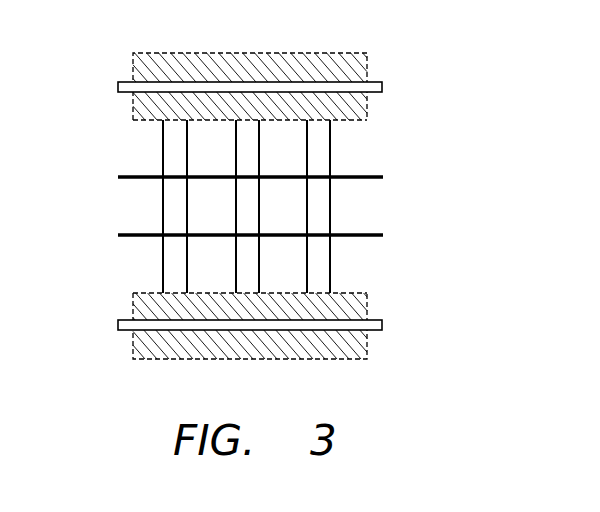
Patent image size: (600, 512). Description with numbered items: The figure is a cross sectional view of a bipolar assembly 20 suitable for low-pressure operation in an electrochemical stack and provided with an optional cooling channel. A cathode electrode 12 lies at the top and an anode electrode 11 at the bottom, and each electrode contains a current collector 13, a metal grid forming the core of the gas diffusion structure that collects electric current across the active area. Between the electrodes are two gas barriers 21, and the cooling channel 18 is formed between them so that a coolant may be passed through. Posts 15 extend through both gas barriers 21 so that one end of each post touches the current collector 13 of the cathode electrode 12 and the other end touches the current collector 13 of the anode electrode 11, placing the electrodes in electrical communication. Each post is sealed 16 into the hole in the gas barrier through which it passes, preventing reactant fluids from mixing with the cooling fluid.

The heat pipe assembly 20 is at (468, 106).
The anode electrode 11 is at (133, 310).
The cathode electrode 12 is at (133, 104).
The current collector 13 is at (150, 122).
The post 15 is at (330, 142).
The seal 16 is at (163, 240).
The cooling channel 18 is at (118, 208).
The gas barrier 21 is at (380, 172).